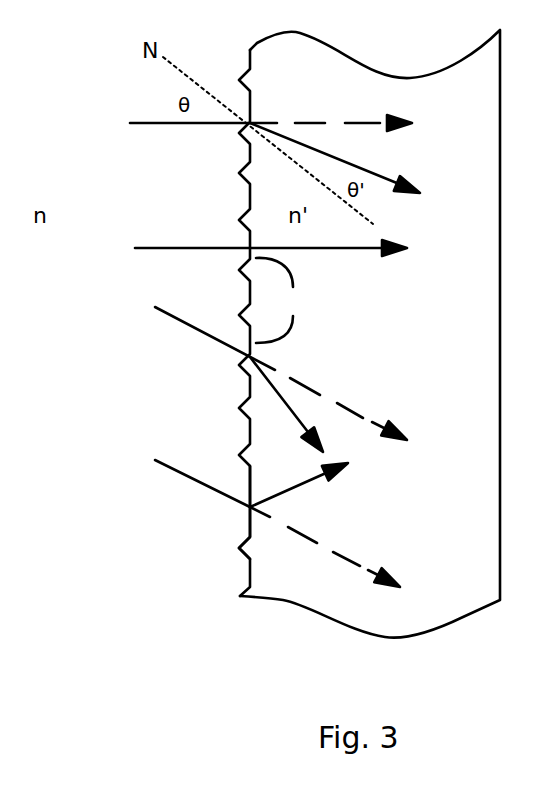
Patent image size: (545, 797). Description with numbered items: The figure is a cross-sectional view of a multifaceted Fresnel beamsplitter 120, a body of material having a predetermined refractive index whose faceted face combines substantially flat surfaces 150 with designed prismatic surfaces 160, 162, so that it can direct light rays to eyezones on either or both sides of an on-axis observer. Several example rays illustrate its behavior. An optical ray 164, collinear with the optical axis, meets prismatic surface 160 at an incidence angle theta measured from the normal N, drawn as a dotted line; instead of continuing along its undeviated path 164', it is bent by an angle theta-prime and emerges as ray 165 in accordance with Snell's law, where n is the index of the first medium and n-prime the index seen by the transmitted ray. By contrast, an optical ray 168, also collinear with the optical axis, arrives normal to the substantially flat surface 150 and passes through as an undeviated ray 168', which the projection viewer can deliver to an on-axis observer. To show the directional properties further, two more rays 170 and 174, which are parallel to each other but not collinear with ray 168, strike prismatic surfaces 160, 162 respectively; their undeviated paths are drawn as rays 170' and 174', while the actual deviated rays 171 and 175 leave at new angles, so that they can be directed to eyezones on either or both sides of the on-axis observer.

The multifaceted Fresnel beamsplitter 120 is at (418, 623).
The substantially flat surface 150 is at (287, 300).
The prismatic surface 160 is at (250, 356).
The prismatic surface 162 is at (247, 522).
The optical ray 164 is at (175, 156).
The undeviated ray 164' is at (331, 92).
The deviated ray 165 is at (390, 178).
The optical ray 168 is at (171, 278).
The undeviated ray 168' is at (328, 283).
The optical ray 170 is at (191, 365).
The undeviated ray 170' is at (353, 394).
The deviated ray 171 is at (283, 404).
The optical ray 174 is at (180, 507).
The undeviated ray 174' is at (354, 547).
The deviated ray 175 is at (296, 487).